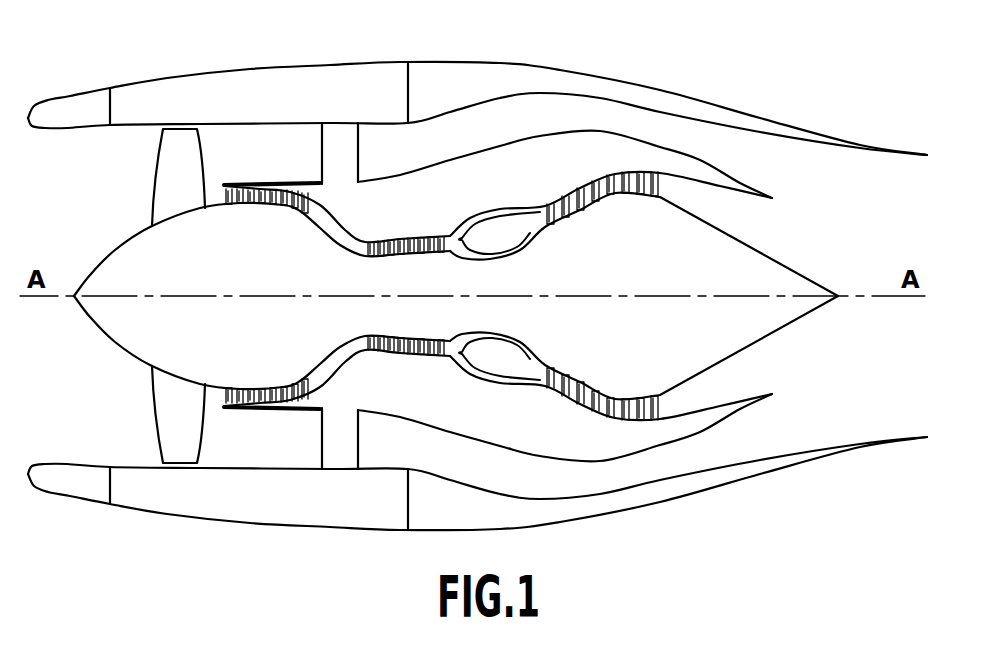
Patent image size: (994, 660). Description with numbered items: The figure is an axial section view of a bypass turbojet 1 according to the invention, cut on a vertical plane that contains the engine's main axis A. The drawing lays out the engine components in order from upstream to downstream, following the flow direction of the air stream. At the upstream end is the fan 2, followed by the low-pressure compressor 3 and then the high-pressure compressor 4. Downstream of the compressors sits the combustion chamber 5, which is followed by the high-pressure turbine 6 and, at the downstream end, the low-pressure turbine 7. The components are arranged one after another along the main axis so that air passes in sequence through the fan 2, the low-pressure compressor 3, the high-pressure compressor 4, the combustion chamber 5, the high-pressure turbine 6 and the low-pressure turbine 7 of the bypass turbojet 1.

The bypass turbojet 1 is at (605, 65).
The fan 2 is at (165, 185).
The low-pressure compressor 3 is at (243, 176).
The high-pressure compressor 4 is at (408, 226).
The combustion chamber 5 is at (486, 232).
The high-pressure turbine 6 is at (540, 196).
The low-pressure turbine 7 is at (591, 165).